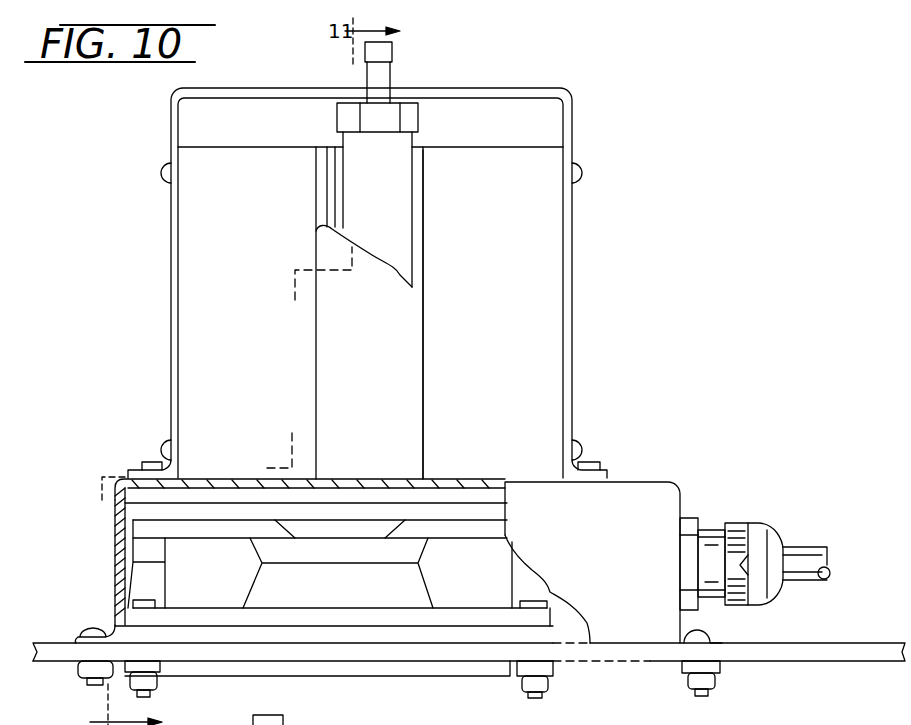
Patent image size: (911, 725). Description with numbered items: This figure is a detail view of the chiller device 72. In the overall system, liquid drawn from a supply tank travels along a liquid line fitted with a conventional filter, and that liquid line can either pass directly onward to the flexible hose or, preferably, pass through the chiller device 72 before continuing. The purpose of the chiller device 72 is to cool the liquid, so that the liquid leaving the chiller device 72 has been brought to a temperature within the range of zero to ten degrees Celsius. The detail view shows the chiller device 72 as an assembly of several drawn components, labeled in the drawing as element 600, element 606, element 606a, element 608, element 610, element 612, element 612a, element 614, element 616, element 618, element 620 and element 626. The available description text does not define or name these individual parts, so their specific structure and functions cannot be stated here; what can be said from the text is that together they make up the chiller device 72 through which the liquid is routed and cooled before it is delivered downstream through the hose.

The chiller device 72 is at (573, 113).
The sensor body 600 is at (650, 498).
The tube 606 is at (425, 180).
The tube inner wall 606a is at (317, 163).
The inner sleeve 608 is at (343, 208).
The intermediate sleeve 610 is at (335, 183).
The chamber 612 is at (512, 378).
The chamber 612a is at (276, 378).
The fitting 614 is at (393, 63).
The base 616 is at (257, 578).
The mounting plate 618 is at (394, 678).
The top wall 620 is at (548, 136).
The nut 626 is at (389, 167).